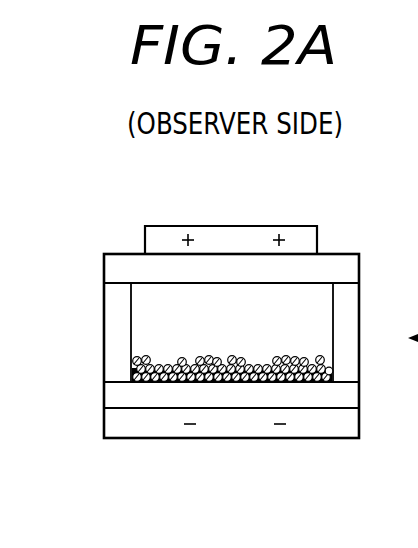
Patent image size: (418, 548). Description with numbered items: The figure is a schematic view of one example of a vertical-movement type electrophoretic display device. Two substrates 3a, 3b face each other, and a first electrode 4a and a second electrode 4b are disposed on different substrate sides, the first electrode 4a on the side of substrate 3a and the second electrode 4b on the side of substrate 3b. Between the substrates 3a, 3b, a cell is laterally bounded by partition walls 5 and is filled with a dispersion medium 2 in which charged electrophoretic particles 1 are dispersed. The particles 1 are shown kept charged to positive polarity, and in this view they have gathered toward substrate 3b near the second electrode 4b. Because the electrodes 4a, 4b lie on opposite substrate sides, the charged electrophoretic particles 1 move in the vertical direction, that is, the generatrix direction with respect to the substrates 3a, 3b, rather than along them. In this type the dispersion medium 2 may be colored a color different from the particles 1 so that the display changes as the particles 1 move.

The charged electrophoretic particles 1 is at (218, 356).
The dispersion medium 2 is at (248, 302).
The substrate 3a is at (338, 268).
The substrate 3b is at (330, 395).
The first electrode 4a is at (167, 243).
The second electrode 4b is at (158, 423).
The partition walls 5 is at (118, 305).